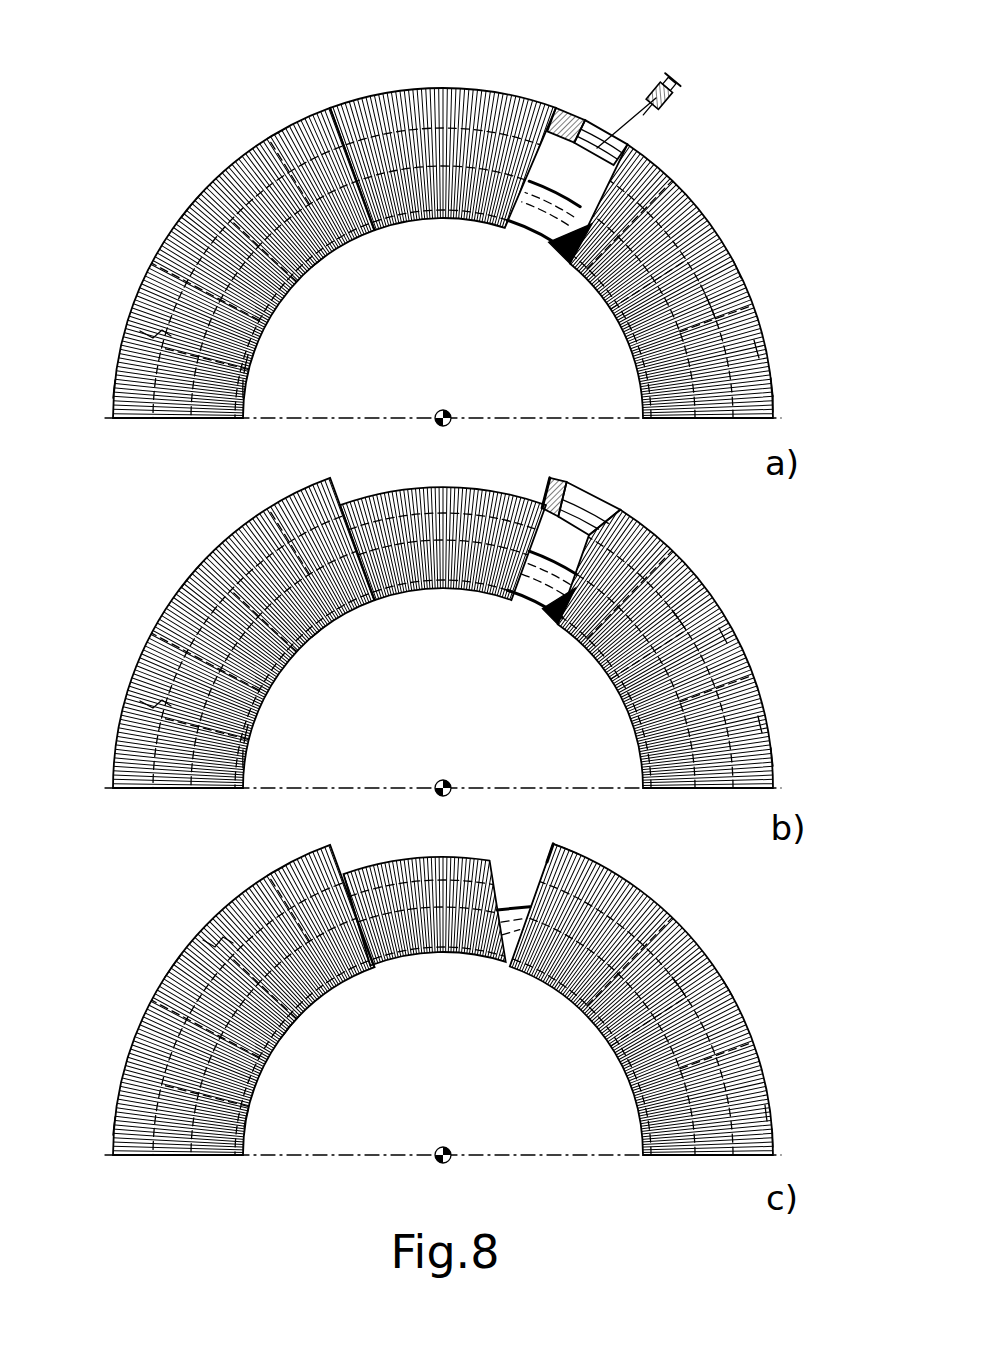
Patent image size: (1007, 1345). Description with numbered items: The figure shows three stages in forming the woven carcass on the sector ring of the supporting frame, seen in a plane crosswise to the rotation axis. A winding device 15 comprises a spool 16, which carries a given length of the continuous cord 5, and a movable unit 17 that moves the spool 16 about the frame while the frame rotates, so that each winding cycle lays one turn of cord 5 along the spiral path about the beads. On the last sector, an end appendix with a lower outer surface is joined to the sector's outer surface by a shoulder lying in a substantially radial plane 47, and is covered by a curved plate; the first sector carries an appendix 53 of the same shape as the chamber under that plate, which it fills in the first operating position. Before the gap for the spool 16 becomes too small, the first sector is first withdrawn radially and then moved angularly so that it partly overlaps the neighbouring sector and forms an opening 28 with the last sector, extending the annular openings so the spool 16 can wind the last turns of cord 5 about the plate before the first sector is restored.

The continuous cord 5 is at (637, 122).
The winding device 15 is at (641, 86).
The spool 16 is at (670, 106).
The movable unit 17 is at (663, 76).
The opening 28 is at (513, 888).
The radial plane 47 is at (586, 520).
The appendix 53 is at (598, 526).